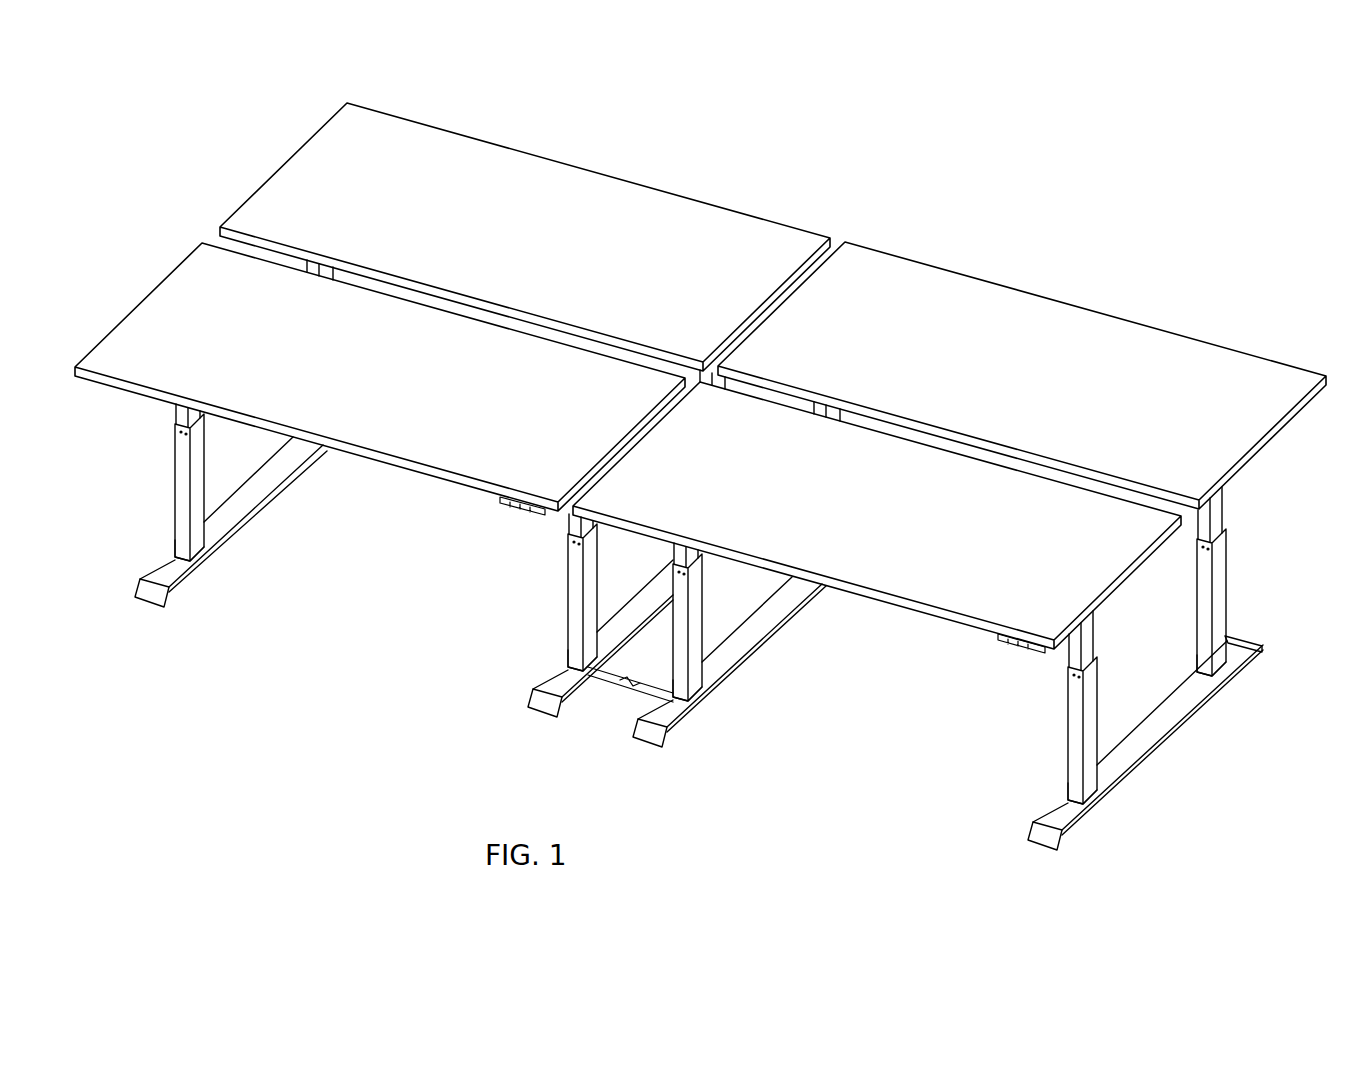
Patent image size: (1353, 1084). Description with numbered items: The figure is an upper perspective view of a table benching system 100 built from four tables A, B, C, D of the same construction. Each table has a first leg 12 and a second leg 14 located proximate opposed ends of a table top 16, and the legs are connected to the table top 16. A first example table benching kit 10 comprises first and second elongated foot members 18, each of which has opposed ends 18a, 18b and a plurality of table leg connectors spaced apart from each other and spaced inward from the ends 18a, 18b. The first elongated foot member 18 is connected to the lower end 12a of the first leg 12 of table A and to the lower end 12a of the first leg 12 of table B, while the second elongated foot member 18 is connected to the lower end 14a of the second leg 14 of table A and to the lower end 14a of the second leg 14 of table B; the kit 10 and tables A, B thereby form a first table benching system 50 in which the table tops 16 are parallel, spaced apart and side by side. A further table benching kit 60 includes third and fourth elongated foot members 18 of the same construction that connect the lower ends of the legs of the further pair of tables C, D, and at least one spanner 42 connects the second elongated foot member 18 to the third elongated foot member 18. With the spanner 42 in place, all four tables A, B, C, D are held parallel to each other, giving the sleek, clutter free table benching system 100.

The table benching system 100 is at (907, 117).
The table benching kit 10 is at (1262, 738).
The first leg 12 is at (700, 366).
The lower end of first leg 12a is at (580, 655).
The second leg 14 is at (318, 272).
The lower end of second leg 14a is at (188, 548).
The table top 16 is at (527, 162).
The elongated foot member 18 is at (284, 496).
The end of foot member 18a is at (139, 583).
The end of foot member 18b is at (1258, 638).
The spanner 42 is at (611, 700).
The table benching system 50 is at (1244, 282).
The table benching kit 60 is at (318, 695).
The first table A is at (923, 626).
The second table B is at (1118, 304).
The third table C is at (410, 490).
The fourth table D is at (629, 168).